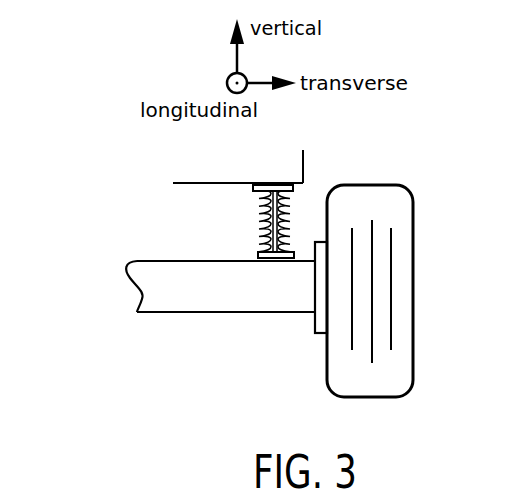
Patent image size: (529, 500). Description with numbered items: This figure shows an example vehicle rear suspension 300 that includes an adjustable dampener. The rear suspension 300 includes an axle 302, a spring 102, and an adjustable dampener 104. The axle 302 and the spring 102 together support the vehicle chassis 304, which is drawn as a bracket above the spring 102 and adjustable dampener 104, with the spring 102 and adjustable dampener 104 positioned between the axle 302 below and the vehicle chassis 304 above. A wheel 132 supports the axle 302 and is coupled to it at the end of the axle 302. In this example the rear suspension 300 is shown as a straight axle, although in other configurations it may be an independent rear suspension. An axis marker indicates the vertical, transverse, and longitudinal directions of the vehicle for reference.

The rear suspension 300 is at (108, 159).
The vehicle chassis 304 is at (303, 163).
The spring 102 is at (268, 216).
The adjustable dampener 104 is at (268, 236).
The axle 302 is at (207, 312).
The wheel 132 is at (413, 277).